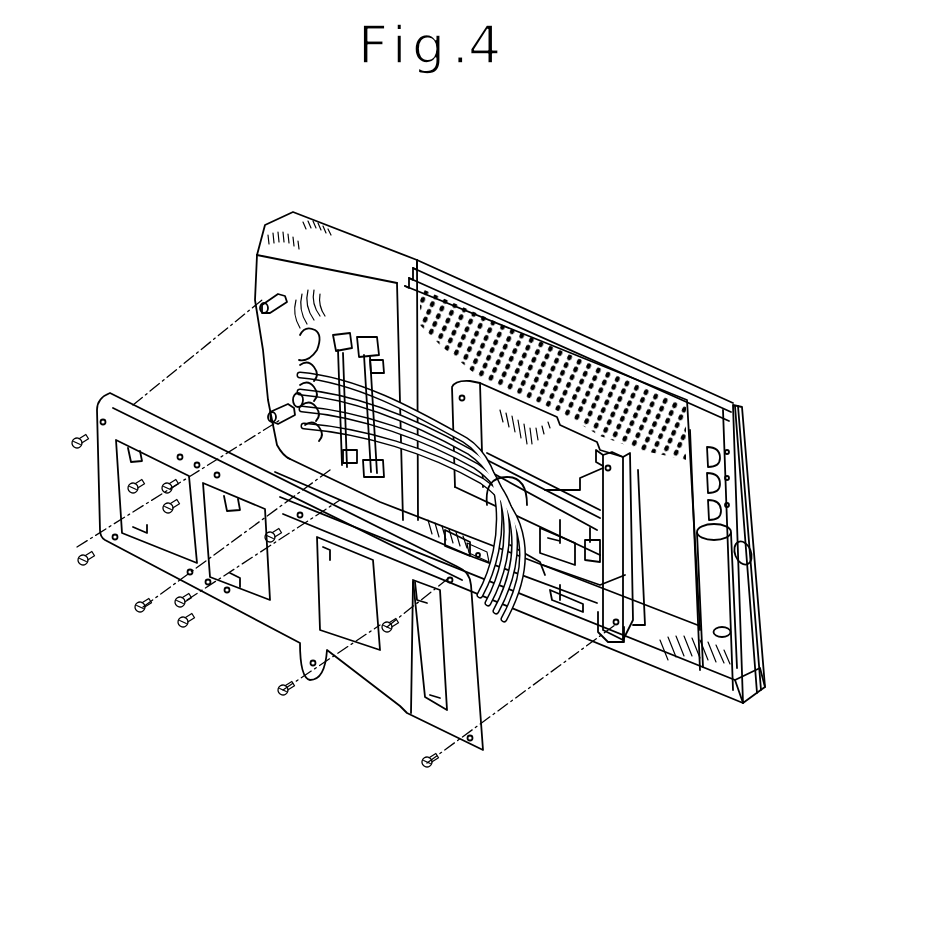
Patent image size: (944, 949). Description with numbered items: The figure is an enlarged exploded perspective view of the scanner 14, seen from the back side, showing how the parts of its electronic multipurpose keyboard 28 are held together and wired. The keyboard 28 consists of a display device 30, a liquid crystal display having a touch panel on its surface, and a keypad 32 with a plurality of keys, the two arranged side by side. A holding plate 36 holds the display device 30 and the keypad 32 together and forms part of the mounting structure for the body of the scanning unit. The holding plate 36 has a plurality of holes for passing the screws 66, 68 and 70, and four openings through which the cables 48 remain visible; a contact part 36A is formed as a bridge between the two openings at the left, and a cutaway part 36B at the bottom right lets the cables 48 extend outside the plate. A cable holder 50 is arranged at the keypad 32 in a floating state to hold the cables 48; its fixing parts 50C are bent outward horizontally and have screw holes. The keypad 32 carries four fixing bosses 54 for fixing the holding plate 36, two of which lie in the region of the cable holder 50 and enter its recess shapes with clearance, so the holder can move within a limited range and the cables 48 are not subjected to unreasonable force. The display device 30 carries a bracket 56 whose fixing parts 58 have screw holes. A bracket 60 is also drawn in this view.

The scanner 14 is at (245, 222).
The electronic multipurpose keyboard 28 is at (534, 434).
The display device 30 is at (707, 390).
The keypad 32 is at (295, 210).
The holding plate 36 is at (275, 556).
The contact part 36A is at (213, 527).
The cutaway part 36B is at (400, 707).
The cables 48 is at (566, 312).
The cable holder 50 is at (350, 337).
The fixing parts 50C is at (337, 337).
The fixing bosses 54 is at (367, 337).
The bracket 56 is at (627, 413).
The fixing parts 58 is at (610, 473).
The bracket 60 is at (590, 462).
The screws 66 is at (74, 437).
The screws 68 is at (278, 686).
The screws 70 is at (122, 489).